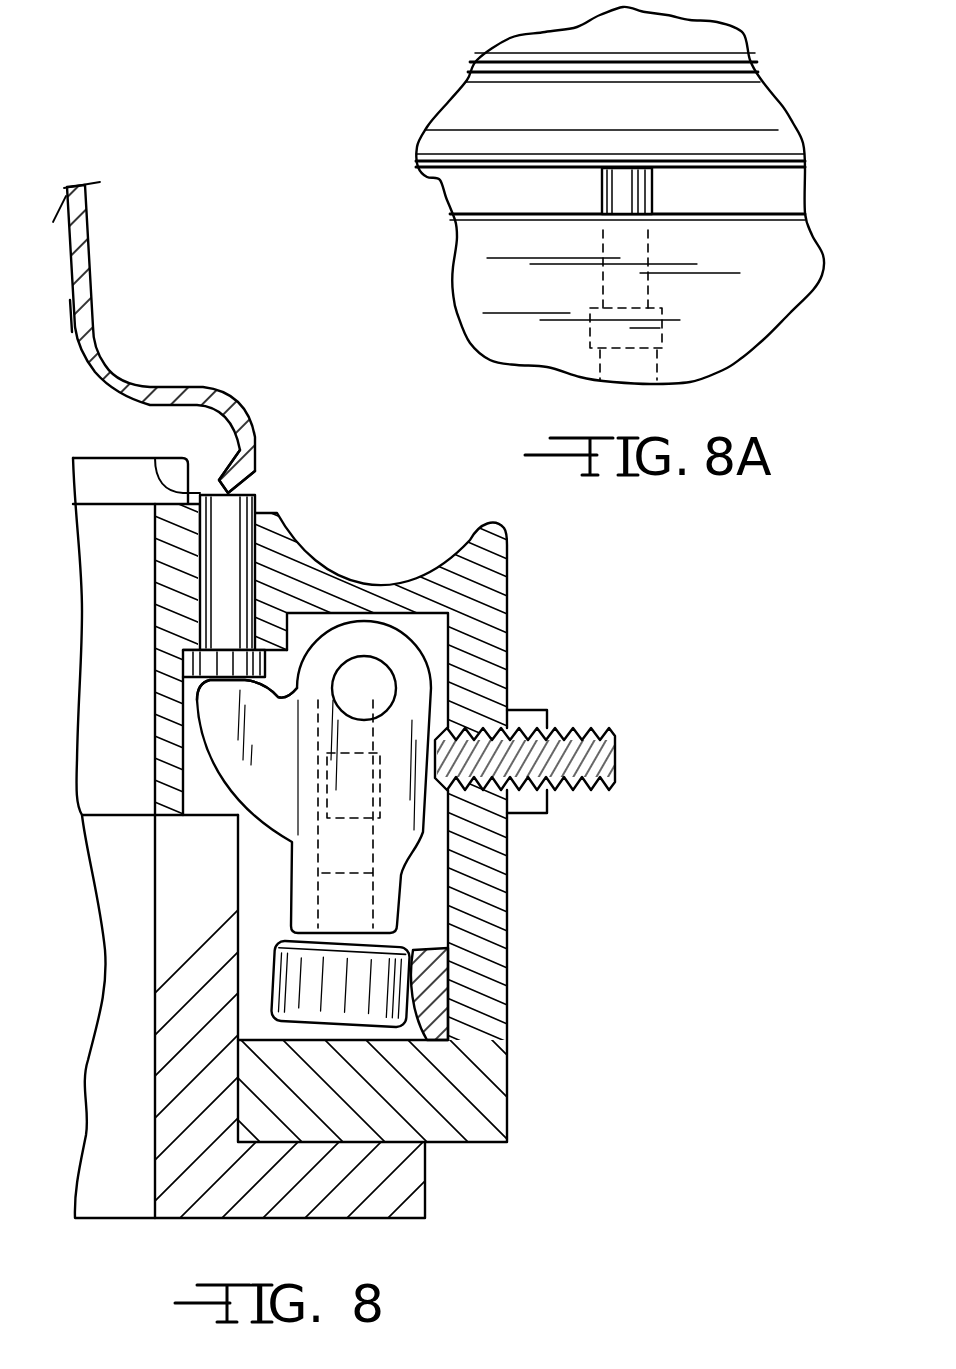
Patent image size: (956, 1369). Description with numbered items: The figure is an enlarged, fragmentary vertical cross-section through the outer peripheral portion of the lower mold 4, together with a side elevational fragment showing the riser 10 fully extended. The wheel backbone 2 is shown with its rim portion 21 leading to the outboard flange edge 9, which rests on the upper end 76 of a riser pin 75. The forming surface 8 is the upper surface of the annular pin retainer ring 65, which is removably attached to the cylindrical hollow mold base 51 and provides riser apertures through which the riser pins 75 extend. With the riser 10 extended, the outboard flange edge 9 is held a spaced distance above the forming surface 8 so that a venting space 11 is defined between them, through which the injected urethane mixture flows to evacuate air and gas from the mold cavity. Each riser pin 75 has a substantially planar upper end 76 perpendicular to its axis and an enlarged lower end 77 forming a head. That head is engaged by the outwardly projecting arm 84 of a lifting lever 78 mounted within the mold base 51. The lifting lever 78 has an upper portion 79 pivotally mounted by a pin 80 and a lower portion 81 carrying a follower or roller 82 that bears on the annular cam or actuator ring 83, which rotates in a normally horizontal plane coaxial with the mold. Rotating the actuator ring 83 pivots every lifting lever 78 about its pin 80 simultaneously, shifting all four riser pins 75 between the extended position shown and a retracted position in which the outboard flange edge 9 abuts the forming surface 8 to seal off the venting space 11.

In FIG. 8, the wheel backbone 2 is at (92, 282).
In FIG. 8A, the wheel backbone 2 is at (560, 43).
In FIG. 8, the lower mold 4 is at (113, 1197).
In FIG. 8A, the lower mold 4 is at (473, 297).
In FIG. 8A, the forming surface 8 is at (757, 212).
In FIG. 8, the outboard flange edge 9 is at (155, 458).
In FIG. 8A, the outboard flange edge 9 is at (440, 177).
In FIG. 8, the riser 10 is at (201, 550).
In FIG. 8A, the riser 10 is at (687, 343).
In FIG. 8A, the venting space 11 is at (533, 193).
In FIG. 8, the rim portion 21 is at (68, 314).
In FIG. 8, the mold base 51 is at (415, 1190).
In FIG. 8, the pin retainer ring 65 is at (297, 570).
In FIG. 8A, the pin retainer ring 65 is at (483, 248).
In FIG. 8, the riser pins 75 is at (237, 543).
In FIG. 8A, the riser pins 75 is at (640, 182).
In FIG. 8, the upper ends 76 is at (248, 484).
In FIG. 8, the lower ends 77 is at (183, 660).
In FIG. 8, the lifting lever 78 is at (273, 802).
In FIG. 8, the upper portion 79 is at (407, 663).
In FIG. 8, the pin 80 is at (382, 692).
In FIG. 8, the lower portion 81 is at (383, 912).
In FIG. 8, the follower or roller 82 is at (293, 973).
In FIG. 8, the actuator ring 83 is at (432, 983).
In FIG. 8, the outwardly projecting arm 84 is at (210, 697).